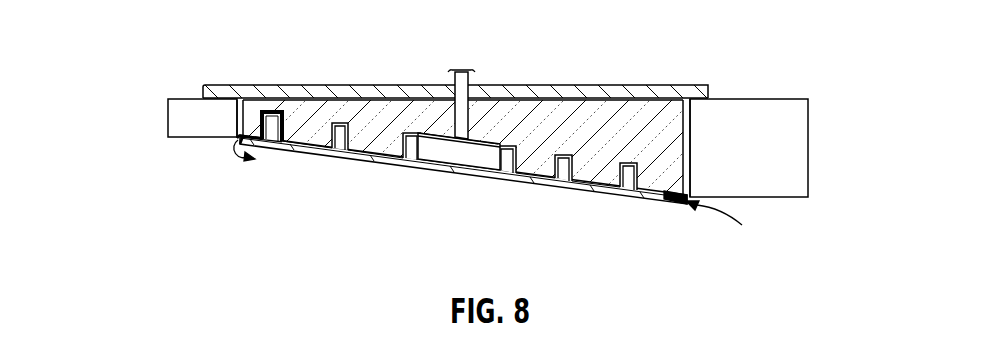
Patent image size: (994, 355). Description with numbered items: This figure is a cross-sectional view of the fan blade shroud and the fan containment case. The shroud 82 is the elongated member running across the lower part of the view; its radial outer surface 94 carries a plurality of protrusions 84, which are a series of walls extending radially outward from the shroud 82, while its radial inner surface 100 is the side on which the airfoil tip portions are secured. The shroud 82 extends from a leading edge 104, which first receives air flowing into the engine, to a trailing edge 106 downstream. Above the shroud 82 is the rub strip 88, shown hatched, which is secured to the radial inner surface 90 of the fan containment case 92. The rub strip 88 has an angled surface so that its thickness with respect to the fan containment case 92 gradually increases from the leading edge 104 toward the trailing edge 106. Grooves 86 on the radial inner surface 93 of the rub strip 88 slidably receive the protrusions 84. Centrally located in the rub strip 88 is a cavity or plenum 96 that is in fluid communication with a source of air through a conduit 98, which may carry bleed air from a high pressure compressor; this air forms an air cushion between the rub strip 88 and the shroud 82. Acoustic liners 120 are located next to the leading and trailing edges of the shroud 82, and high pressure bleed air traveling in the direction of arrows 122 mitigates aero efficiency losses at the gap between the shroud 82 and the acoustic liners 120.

The shroud 82 is at (675, 208).
The protrusions 84 is at (336, 152).
The grooves 86 is at (344, 122).
The rub strip 88 is at (565, 100).
The radial inner surface 90 is at (698, 96).
The fan containment case 92 is at (241, 99).
The radial inner surface 93 is at (635, 176).
The radial outer surface 94 is at (297, 100).
The cavity or plenum 96 is at (500, 128).
The conduit 98 is at (469, 82).
The radial inner surface 100 is at (487, 172).
The leading edge 104 is at (253, 146).
The trailing edge 106 is at (688, 203).
The acoustic liners 120 is at (177, 113).
The arrows 122 is at (233, 148).